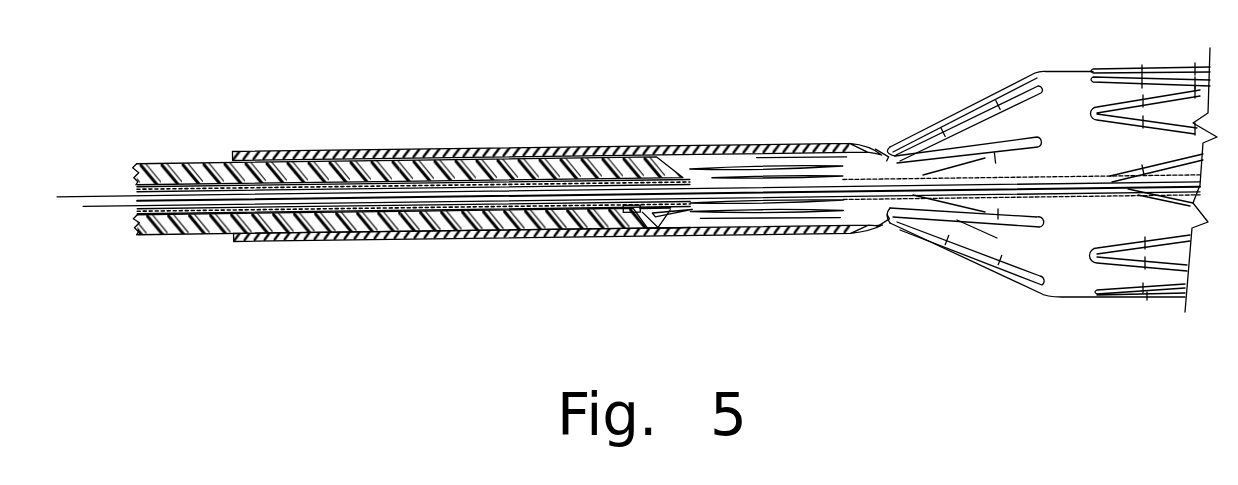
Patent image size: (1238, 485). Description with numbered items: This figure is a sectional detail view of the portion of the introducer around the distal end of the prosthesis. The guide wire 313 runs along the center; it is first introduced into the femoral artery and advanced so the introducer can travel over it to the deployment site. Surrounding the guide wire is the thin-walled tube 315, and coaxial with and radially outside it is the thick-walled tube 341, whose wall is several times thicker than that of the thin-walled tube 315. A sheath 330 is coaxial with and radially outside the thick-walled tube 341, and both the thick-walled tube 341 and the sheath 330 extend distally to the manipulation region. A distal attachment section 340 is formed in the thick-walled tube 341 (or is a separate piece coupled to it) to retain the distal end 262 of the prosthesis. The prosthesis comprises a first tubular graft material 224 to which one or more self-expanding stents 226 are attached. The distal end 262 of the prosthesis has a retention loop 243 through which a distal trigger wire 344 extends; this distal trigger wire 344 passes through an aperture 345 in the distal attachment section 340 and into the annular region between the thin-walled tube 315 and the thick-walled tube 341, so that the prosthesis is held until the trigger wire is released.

The first tubular graft material 224 is at (1063, 92).
The self-expanding stents 226 is at (1172, 69).
The retention loop 243 is at (667, 232).
The distal end 262 is at (764, 244).
The guide wire 313 is at (90, 192).
The thin-walled tube 315 is at (174, 186).
The sheath 330 is at (735, 151).
The distal attachment section 340 is at (563, 156).
The thick-walled tube 341 is at (180, 226).
The distal trigger wire 344 is at (493, 207).
The aperture 345 is at (651, 236).